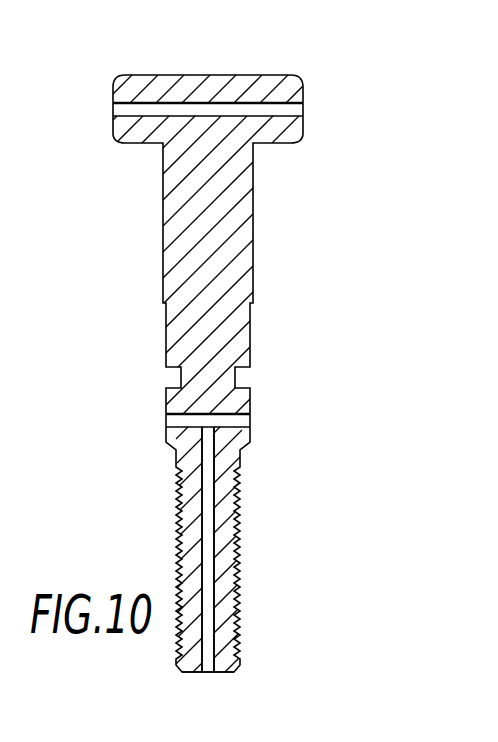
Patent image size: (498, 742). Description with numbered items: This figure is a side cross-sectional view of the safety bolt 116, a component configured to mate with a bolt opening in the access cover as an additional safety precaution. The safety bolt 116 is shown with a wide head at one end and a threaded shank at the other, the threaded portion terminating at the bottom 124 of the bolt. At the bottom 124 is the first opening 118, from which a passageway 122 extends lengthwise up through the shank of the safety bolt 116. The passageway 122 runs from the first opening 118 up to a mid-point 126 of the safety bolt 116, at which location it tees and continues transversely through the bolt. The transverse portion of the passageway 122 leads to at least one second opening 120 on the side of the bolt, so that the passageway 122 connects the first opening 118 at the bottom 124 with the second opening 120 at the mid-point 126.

The safety bolt 116 is at (332, 82).
The first opening 118 is at (205, 674).
The second opening 120 is at (166, 420).
The passageway 122 is at (216, 505).
The bottom 124 is at (240, 669).
The mid-point 126 is at (150, 466).